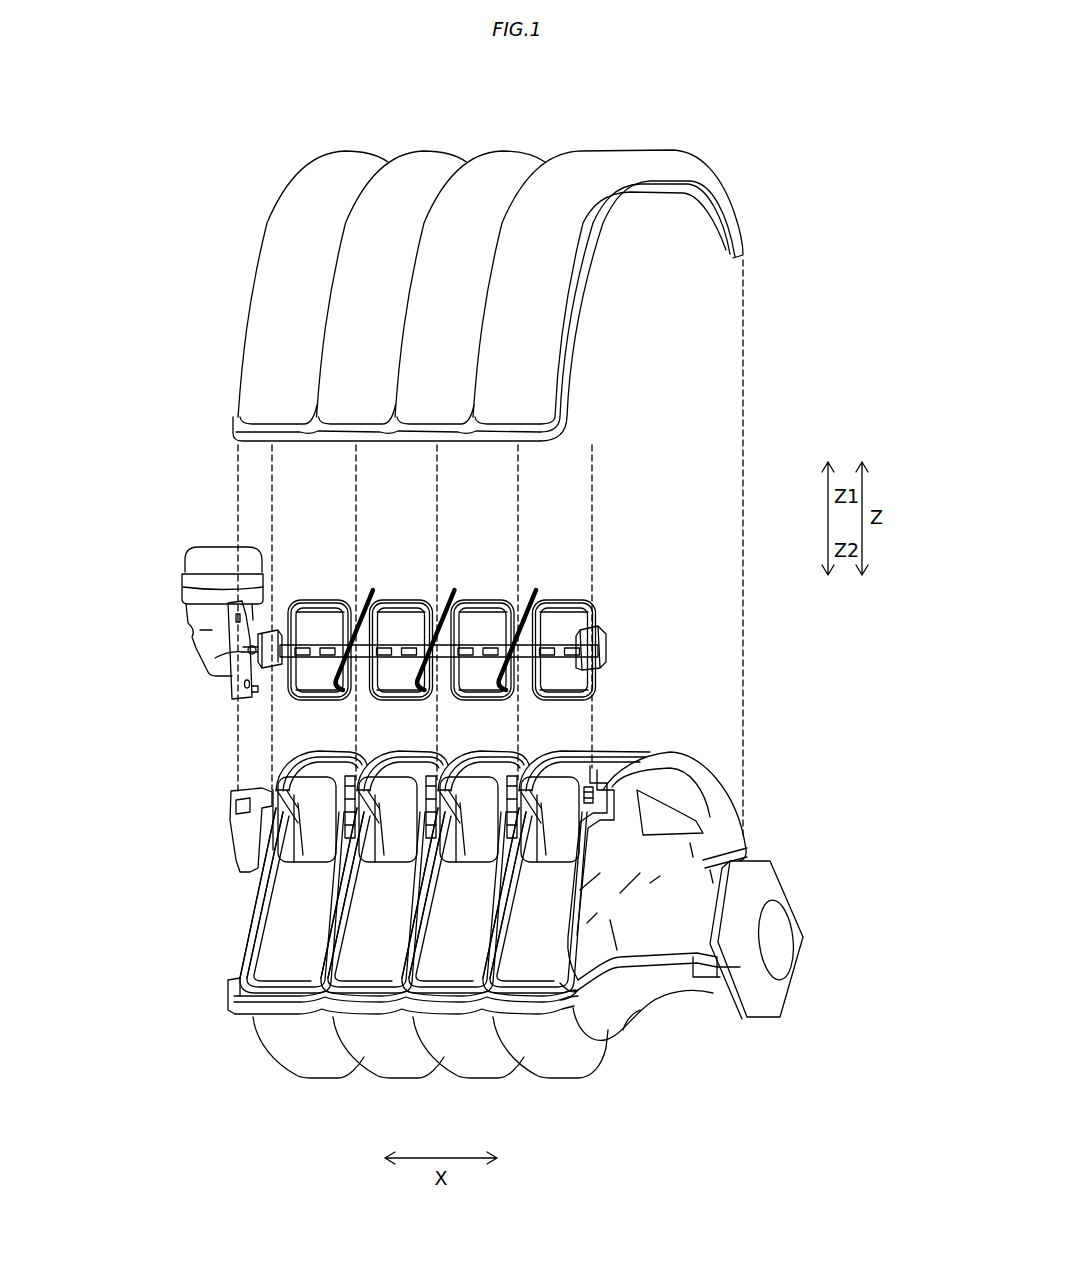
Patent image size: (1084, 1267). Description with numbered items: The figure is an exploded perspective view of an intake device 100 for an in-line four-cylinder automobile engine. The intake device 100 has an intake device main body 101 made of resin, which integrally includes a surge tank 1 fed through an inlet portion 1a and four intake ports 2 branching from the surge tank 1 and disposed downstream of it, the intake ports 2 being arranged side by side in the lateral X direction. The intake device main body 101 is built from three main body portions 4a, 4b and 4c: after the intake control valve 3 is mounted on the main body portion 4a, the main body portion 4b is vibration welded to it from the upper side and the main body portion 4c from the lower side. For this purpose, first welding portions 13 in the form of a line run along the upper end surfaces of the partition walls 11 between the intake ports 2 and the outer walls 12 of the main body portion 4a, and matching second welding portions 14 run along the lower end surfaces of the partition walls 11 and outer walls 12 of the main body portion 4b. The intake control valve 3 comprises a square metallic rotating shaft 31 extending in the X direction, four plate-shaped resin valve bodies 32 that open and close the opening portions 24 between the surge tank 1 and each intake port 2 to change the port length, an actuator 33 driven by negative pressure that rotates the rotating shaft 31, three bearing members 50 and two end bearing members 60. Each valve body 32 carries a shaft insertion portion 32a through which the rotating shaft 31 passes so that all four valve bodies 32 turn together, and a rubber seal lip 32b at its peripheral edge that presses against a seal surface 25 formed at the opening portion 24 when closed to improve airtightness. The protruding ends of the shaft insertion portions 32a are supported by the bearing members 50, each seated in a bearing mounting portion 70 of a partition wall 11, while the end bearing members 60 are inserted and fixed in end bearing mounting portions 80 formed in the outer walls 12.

The intake device 100 is at (748, 130).
The intake device main body 101 is at (458, 613).
The main body portion 4b is at (488, 295).
The main body portion 4a is at (457, 842).
The main body portion 4c is at (606, 1030).
The second welding portion 14 is at (727, 246).
The first welding portion 13 is at (613, 760).
The outer wall 12 is at (643, 764).
The partition wall 11 is at (339, 951).
The opening portion 24 is at (314, 848).
The seal surface 25 is at (428, 819).
The bearing mounting portion 70 is at (350, 798).
The end bearing mounting portion 80 is at (585, 788).
The intake port 2 is at (312, 1065).
The surge tank 1 is at (704, 885).
The inlet portion 1a is at (775, 966).
The intake control valve 3 is at (182, 519).
The actuator 33 is at (186, 583).
The rotating shaft 31 is at (242, 653).
The valve body 32 is at (312, 620).
The shaft insertion portion 32a is at (313, 658).
The seal lip 32b is at (334, 598).
The bearing member 50 is at (360, 584).
The end bearing member 60 is at (270, 630).